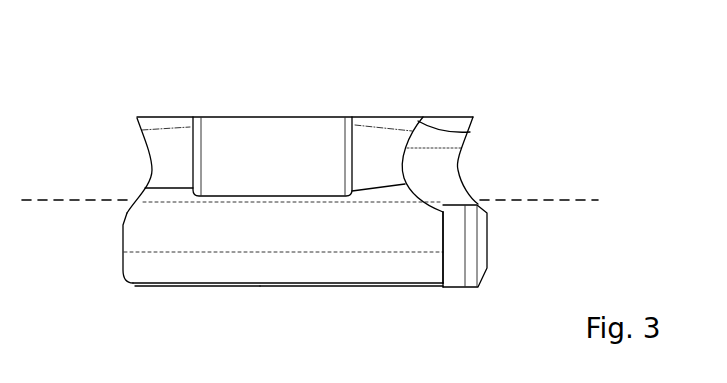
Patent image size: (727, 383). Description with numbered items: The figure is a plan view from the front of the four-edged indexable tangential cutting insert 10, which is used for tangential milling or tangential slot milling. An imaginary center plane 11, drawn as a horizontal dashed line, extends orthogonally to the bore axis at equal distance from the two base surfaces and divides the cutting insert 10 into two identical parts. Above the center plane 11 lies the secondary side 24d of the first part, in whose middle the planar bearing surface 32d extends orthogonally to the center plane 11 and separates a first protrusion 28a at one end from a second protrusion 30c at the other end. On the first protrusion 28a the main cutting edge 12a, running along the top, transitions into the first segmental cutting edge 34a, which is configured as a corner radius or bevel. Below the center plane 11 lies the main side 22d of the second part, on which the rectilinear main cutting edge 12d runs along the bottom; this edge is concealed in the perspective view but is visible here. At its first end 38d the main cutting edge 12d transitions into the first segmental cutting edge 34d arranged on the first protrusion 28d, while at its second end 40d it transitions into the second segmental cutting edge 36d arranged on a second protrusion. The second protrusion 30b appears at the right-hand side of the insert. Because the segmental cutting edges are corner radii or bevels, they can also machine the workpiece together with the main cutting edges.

The cutting insert 10 is at (612, 93).
The center plane 11 is at (581, 199).
The second protrusion 30c is at (153, 116).
The secondary side 24d is at (232, 138).
The bearing surface 32d is at (300, 138).
The first protrusion 28a is at (388, 122).
The main cutting edge 12a is at (421, 118).
The first segmental cutting edge 34a is at (470, 132).
The second protrusion 30b is at (487, 244).
The first segmental cutting edge 34d is at (446, 280).
The first protrusion 28d is at (448, 284).
The second segmental cutting edge 36d is at (130, 282).
The main cutting edge 12d is at (350, 285).
The second end 40d is at (137, 286).
The first end 38d is at (423, 284).
The main side 22d is at (238, 240).